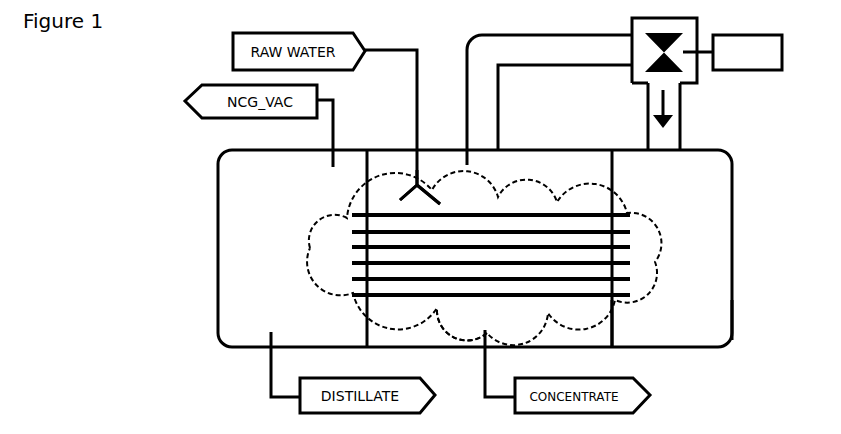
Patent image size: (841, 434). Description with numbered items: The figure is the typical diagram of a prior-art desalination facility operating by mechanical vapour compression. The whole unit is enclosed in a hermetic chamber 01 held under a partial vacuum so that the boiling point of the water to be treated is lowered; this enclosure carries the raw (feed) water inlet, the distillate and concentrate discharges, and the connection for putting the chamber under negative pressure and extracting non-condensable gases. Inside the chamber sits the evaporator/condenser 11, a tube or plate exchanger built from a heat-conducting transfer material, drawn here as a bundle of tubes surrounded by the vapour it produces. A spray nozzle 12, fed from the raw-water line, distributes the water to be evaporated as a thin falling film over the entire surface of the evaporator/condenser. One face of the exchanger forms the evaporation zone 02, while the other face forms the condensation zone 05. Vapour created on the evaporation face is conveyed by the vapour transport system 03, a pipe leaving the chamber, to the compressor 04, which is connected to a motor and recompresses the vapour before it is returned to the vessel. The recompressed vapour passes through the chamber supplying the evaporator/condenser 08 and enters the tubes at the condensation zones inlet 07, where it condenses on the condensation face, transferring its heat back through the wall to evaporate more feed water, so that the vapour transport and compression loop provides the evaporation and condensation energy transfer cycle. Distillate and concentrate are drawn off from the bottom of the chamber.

The hermetic chamber 01 is at (501, 248).
The evaporation zone 02 is at (491, 230).
The vapour transport system 03 is at (582, 125).
The compressor 04 is at (707, 73).
The condensation zone 05 is at (511, 312).
The condensation zones inlet 07 is at (663, 264).
The chamber supplying the evaporator/condenser 08 is at (701, 293).
The evaporator/condenser 11 is at (308, 247).
The spray nozzle 12 is at (404, 153).